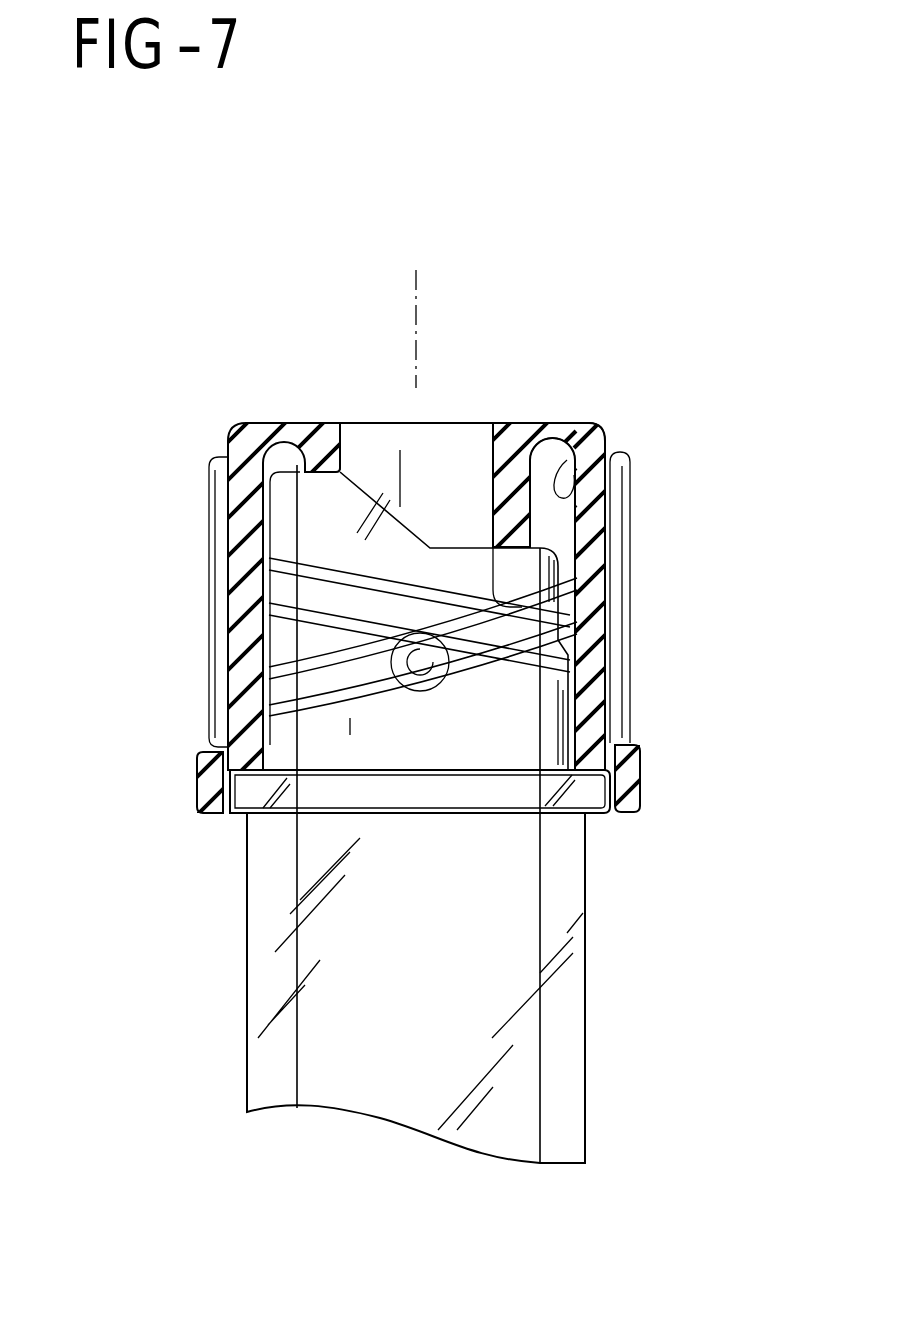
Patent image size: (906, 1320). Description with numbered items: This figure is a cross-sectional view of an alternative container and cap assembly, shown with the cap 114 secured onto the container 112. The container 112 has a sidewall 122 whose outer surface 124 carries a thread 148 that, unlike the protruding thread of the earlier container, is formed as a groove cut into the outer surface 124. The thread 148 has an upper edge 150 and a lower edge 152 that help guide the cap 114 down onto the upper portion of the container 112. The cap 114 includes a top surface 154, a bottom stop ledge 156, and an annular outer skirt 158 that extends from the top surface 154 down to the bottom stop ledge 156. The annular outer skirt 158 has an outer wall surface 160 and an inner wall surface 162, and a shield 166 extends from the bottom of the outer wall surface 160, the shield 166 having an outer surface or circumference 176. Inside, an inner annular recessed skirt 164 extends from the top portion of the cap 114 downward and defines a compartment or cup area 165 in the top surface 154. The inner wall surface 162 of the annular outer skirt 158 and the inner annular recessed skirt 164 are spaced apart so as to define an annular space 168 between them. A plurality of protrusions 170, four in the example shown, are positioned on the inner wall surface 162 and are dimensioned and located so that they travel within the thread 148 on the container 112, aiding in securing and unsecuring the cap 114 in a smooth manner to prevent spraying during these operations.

The container 112 is at (587, 997).
The cap 114 is at (565, 443).
The sidewall 122 is at (587, 1080).
The outer surface 124 is at (612, 738).
The thread 148 is at (319, 592).
The upper edge 150 is at (612, 588).
The lower edge 152 is at (612, 689).
The top surface 154 is at (545, 424).
The bottom stop ledge 156 is at (600, 813).
The annular outer skirt 158 is at (610, 528).
The outer wall surface 160 is at (227, 498).
The inner wall surface 162 is at (600, 422).
The inner annular recessed skirt 164 is at (492, 472).
The compartment or cup area 165 is at (383, 455).
The shield 166 is at (200, 787).
The annular space 168 is at (553, 446).
The protrusions 170 is at (612, 648).
The outer surface or circumference 176 is at (645, 772).